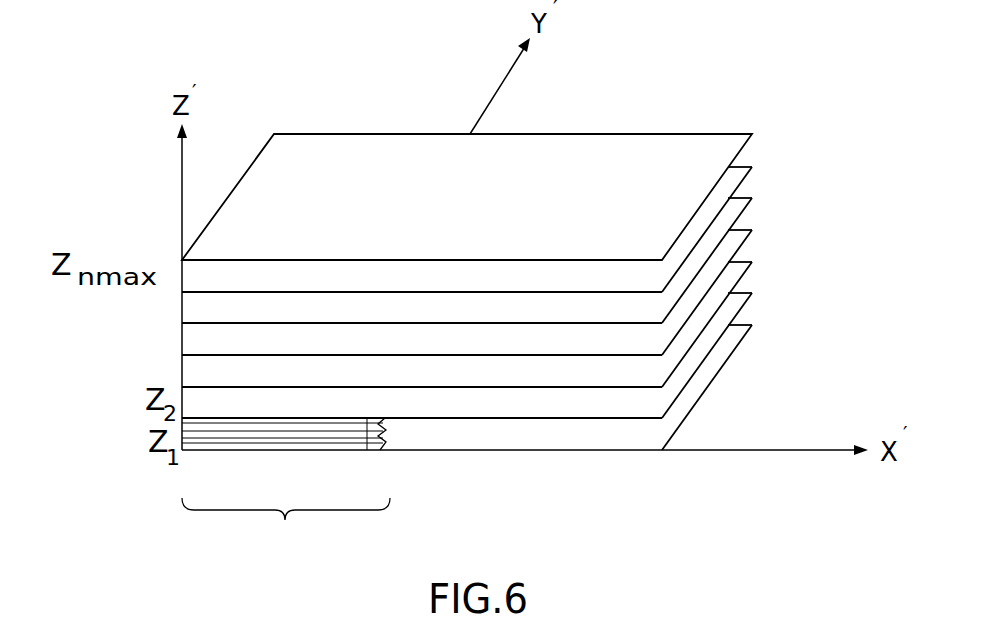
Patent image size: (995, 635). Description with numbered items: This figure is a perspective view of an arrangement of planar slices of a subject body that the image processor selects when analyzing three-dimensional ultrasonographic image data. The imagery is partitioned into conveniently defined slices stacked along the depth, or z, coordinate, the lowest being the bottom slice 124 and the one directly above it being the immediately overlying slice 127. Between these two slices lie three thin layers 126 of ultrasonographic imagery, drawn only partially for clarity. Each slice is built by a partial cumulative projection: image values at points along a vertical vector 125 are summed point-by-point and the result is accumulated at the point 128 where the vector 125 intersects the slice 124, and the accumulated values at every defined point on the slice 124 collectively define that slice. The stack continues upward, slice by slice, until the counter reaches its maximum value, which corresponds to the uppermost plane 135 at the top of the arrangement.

The uppermost plane 135 is at (679, 158).
The immediately overlying slice 127 is at (739, 296).
The bottom slice 124 is at (740, 338).
The point 128 is at (366, 446).
The vertical vector 125 is at (383, 422).
The thin layers 126 is at (285, 520).